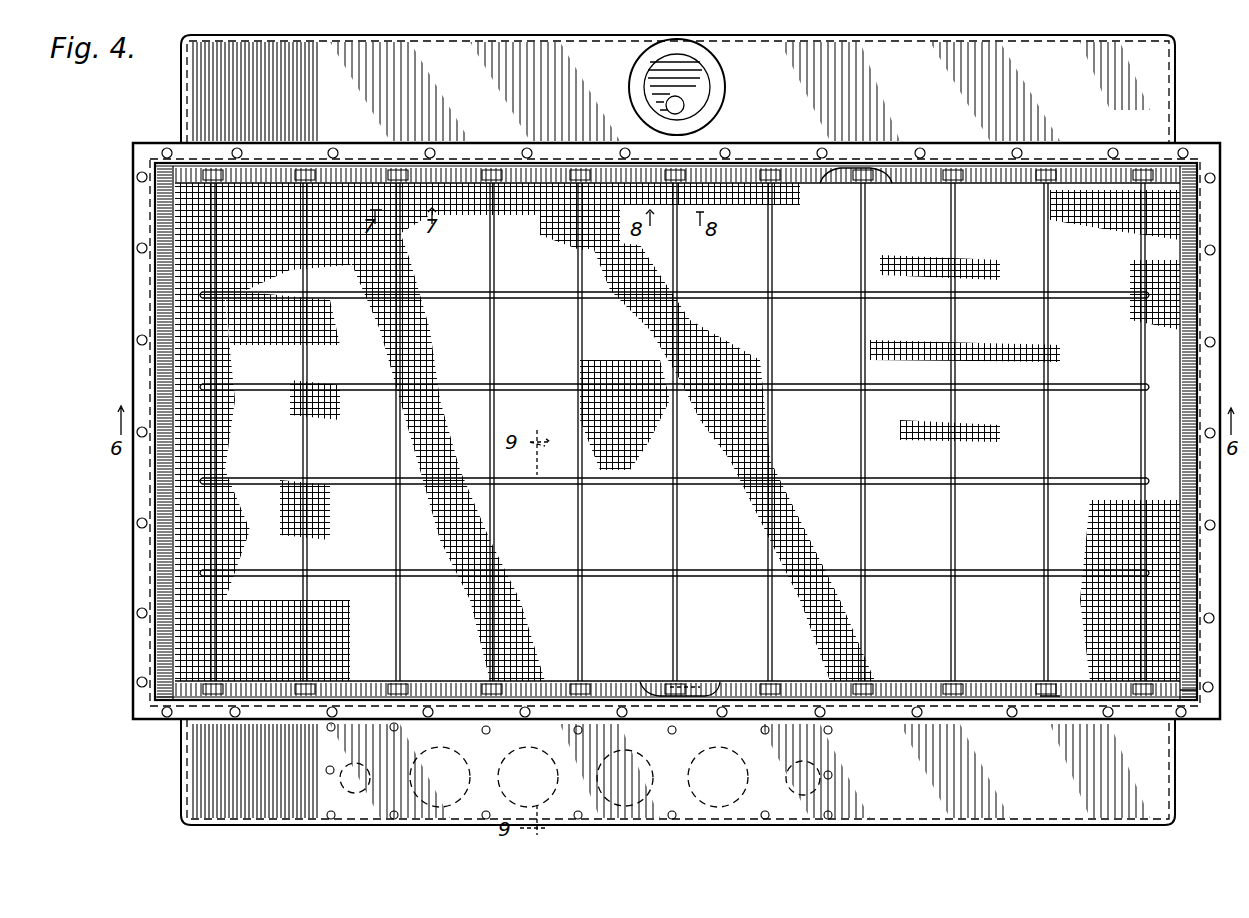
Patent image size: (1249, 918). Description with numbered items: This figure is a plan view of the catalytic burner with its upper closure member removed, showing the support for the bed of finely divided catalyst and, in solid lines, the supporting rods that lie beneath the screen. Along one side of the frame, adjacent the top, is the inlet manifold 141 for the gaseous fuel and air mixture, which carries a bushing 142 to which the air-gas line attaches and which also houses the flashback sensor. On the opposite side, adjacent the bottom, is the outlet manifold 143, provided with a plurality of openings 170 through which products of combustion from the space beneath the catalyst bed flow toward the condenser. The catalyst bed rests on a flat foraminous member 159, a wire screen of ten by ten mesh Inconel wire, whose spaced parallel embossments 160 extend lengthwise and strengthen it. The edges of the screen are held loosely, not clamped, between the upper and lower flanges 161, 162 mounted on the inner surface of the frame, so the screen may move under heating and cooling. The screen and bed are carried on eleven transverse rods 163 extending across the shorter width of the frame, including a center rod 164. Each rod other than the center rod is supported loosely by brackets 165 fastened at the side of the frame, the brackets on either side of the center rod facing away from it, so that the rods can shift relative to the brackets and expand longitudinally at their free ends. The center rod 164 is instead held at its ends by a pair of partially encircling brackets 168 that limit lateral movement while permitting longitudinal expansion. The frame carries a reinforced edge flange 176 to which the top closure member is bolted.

The inlet manifold 141 is at (888, 106).
The bushing 142 is at (700, 80).
The outlet manifold 143 is at (918, 792).
The flat foraminous member 159 is at (350, 235).
The spaced parallel embossments 160 is at (288, 383).
The upper flange 161 is at (1180, 530).
The lower flange 162 is at (878, 183).
The transverse rods 163 is at (578, 358).
The center rod 164 is at (673, 615).
The brackets 165 is at (850, 188).
The partially encircling brackets 168 is at (688, 683).
The openings 170 is at (368, 776).
The upper reinforced edge flange 176 is at (512, 145).